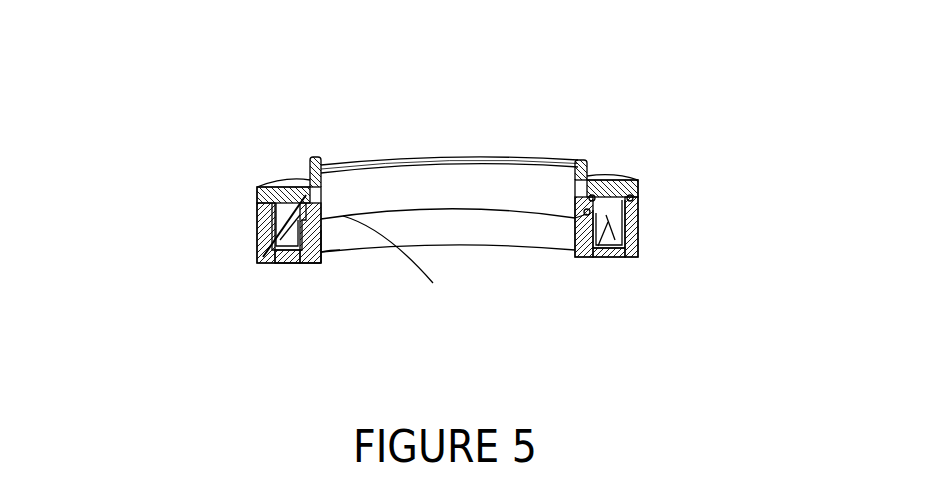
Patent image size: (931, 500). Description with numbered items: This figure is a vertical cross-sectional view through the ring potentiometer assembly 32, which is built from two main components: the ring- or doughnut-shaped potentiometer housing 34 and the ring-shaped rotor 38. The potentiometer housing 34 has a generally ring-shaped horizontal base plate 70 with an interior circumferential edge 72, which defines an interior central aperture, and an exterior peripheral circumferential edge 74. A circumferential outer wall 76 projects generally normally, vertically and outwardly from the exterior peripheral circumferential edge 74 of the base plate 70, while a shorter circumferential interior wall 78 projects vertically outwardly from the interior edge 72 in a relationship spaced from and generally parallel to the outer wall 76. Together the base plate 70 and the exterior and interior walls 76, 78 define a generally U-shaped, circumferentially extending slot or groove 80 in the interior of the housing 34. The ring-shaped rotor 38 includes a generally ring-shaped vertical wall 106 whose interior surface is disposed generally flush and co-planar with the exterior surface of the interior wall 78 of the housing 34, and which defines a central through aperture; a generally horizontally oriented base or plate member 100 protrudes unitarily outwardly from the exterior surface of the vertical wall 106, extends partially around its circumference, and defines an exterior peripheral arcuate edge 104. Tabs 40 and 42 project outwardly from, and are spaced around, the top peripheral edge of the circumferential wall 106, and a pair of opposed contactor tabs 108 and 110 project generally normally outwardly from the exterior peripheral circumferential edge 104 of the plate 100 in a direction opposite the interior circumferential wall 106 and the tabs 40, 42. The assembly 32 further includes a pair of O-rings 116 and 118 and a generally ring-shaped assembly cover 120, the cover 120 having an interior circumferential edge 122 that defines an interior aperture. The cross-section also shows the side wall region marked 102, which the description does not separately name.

The ring potentiometer assembly 32 is at (498, 116).
The potentiometer housing 34 is at (645, 204).
The ring-shaped rotor 38 is at (579, 155).
The tab 40 is at (316, 158).
The tab 42 is at (586, 165).
The base plate 70 is at (281, 263).
The interior circumferential edge 72 is at (337, 252).
The exterior peripheral circumferential edge 74 is at (275, 255).
The circumferential outer wall 76 is at (275, 216).
The circumferential interior wall 78 is at (312, 263).
The circumferentially extending slot or groove 80 is at (270, 236).
The base or plate member 100 is at (260, 185).
The side wall 102 is at (406, 265).
The exterior peripheral arcuate edge 104 is at (613, 228).
The vertical wall 106 is at (358, 190).
The contactor tab 108 is at (283, 250).
The contactor tab 110 is at (618, 247).
The O-ring 116 is at (320, 262).
The O-ring 118 is at (305, 190).
The assembly cover 120 is at (608, 178).
The interior circumferential edge 122 is at (575, 193).